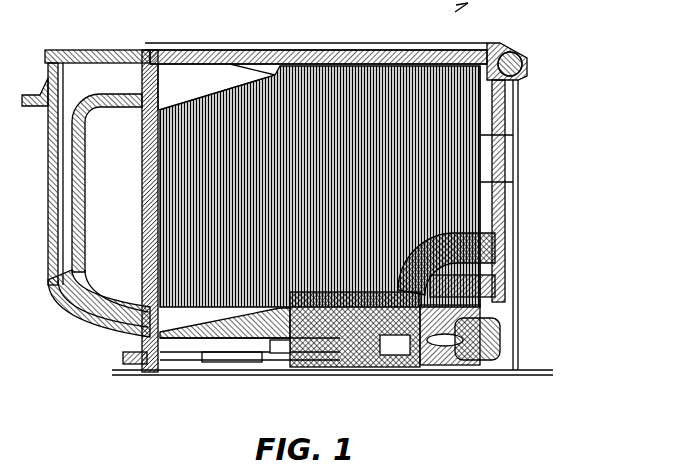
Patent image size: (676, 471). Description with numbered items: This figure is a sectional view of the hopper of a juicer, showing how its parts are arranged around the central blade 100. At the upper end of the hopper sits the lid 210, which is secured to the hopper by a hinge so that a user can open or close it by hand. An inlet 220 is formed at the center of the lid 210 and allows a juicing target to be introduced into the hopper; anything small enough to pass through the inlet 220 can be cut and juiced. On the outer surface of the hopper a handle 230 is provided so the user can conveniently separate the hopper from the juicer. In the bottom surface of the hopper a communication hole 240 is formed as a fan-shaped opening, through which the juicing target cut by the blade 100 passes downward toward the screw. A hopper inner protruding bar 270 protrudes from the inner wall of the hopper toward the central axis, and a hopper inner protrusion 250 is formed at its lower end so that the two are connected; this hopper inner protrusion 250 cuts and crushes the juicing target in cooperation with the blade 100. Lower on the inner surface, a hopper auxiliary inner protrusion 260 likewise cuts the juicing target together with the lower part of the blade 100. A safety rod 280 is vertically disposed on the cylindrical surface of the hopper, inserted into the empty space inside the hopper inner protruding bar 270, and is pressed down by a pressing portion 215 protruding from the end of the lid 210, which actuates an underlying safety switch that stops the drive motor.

The blade 100 is at (307, 372).
The lid 210 is at (245, 49).
The pressing portion 215 is at (487, 50).
The inlet 220 is at (325, 66).
The handle 230 is at (104, 66).
The communication hole 240 is at (418, 365).
The hopper inner protrusion 250 is at (473, 272).
The hopper auxiliary inner protrusion 260 is at (466, 360).
The hopper inner protruding bar 270 is at (482, 119).
The safety rod 280 is at (488, 183).